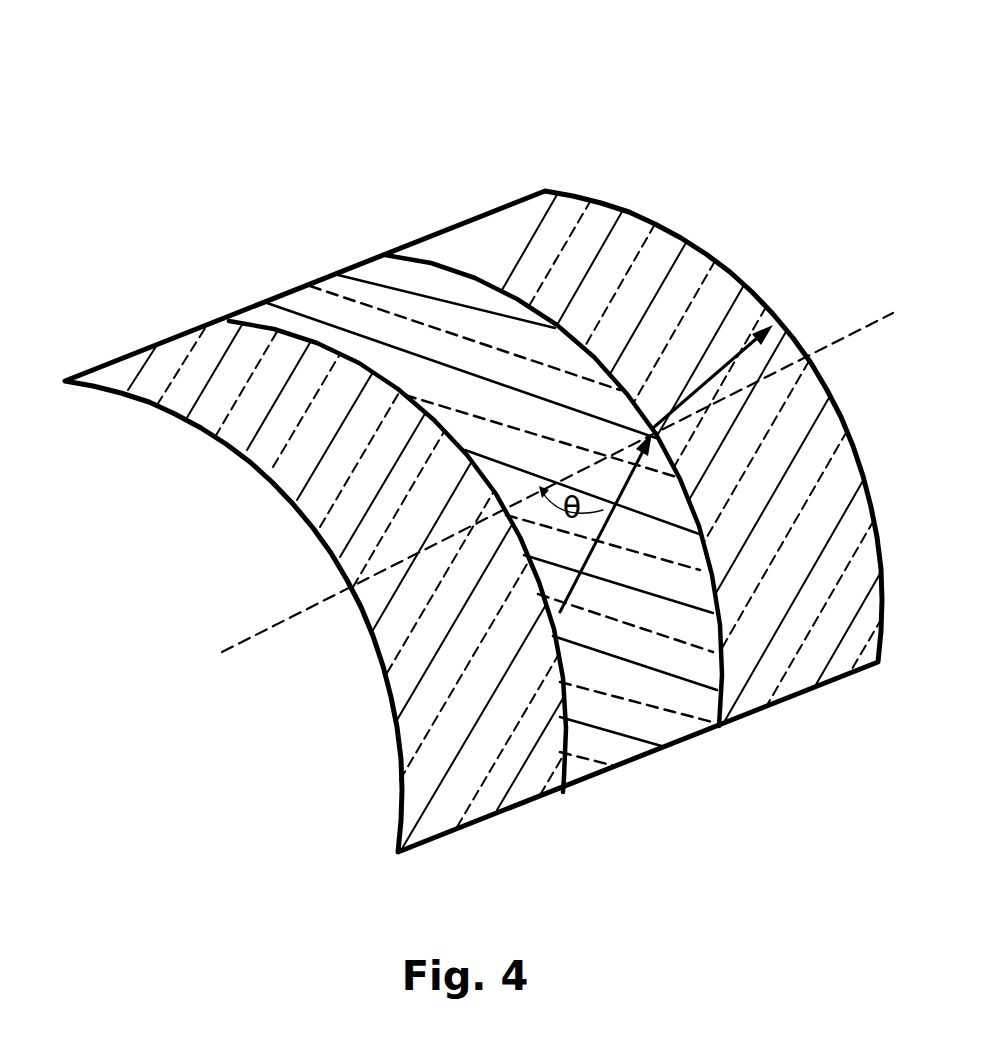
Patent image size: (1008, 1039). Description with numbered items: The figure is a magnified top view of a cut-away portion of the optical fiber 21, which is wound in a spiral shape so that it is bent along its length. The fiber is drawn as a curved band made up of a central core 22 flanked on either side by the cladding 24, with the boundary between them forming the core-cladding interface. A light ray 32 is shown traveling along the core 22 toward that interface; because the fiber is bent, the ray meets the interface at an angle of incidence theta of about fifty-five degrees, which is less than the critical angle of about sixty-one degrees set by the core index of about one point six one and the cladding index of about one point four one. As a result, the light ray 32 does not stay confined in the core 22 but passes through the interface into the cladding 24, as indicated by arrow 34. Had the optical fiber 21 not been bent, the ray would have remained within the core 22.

The optical fiber 21 is at (323, 114).
The core 22 is at (385, 296).
The cladding 24 is at (512, 222).
The light ray 32 is at (590, 545).
The arrow 34 is at (717, 360).